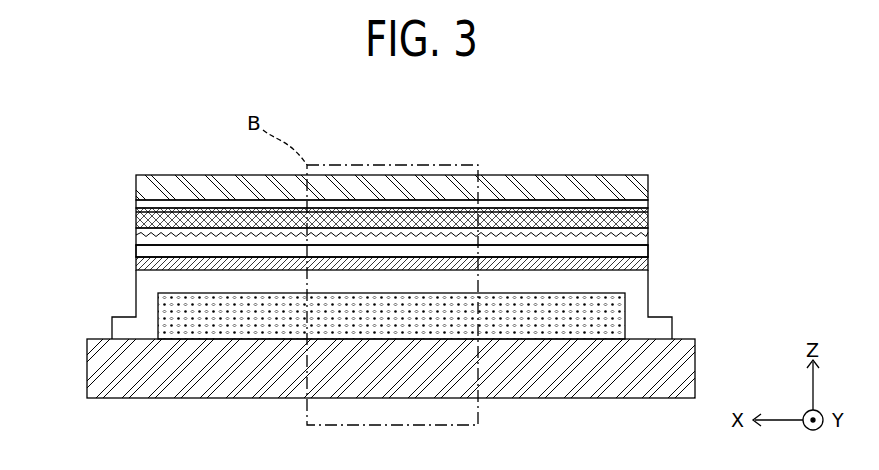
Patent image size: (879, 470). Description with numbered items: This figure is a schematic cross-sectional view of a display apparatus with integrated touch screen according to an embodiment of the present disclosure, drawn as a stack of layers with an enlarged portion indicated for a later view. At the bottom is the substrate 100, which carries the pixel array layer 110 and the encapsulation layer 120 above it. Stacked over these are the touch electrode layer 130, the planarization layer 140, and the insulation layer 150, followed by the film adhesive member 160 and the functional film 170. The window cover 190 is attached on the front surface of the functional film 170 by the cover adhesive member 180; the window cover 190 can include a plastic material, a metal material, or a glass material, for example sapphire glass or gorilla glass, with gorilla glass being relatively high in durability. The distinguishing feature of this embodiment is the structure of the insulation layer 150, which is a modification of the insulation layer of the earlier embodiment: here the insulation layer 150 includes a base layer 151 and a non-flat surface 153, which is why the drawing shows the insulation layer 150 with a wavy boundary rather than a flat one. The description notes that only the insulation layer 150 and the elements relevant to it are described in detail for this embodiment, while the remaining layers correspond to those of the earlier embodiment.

The substrate 100 is at (687, 377).
The pixel array layer 110 is at (625, 327).
The encapsulation layer 120 is at (642, 296).
The touch electrode layer 130 is at (648, 268).
The planarization layer 140 is at (648, 250).
The insulation layer 150 is at (332, 242).
The base layer 151 is at (136, 251).
The non-flat surface 153 is at (136, 229).
The film adhesive member 160 is at (648, 226).
The functional film 170 is at (136, 214).
The cover adhesive member 180 is at (648, 204).
The window cover 190 is at (648, 182).